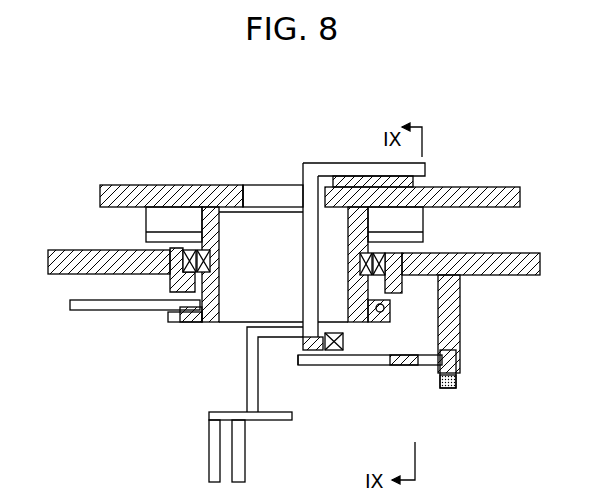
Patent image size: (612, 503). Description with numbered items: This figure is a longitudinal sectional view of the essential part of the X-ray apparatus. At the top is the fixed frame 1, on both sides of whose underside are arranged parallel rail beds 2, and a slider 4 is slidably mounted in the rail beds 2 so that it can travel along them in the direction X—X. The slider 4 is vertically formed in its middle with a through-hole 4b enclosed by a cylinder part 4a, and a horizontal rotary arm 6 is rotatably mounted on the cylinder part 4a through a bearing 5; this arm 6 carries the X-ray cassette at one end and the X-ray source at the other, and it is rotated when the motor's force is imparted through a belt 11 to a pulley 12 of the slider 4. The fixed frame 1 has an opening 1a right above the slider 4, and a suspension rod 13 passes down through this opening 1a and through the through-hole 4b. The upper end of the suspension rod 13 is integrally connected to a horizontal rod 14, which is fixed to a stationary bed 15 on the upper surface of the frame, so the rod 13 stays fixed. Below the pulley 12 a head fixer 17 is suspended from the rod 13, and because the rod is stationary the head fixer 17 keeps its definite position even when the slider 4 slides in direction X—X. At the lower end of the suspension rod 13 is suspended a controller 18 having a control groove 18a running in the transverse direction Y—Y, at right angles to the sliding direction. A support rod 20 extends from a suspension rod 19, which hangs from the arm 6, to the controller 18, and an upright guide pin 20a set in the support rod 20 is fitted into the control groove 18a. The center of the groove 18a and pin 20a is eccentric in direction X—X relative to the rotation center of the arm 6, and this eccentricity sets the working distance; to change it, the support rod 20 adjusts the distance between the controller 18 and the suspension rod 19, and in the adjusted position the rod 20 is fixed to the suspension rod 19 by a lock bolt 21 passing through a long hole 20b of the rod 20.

The fixed frame 1 is at (128, 185).
The opening 1a is at (290, 200).
The rail bed 2 is at (152, 186).
The slider 4 is at (196, 200).
The cylinder part 4a is at (200, 250).
The through-hole 4b is at (258, 225).
The bearing 5 is at (385, 262).
The horizontal rotary arm 6 is at (520, 255).
The belt 11 is at (76, 312).
The pulley 12 is at (192, 325).
The suspension rod 13 is at (310, 262).
The horizontal rod 14 is at (368, 172).
The stationary bed 15 is at (405, 185).
The head fixer 17 is at (212, 449).
The controller 18 is at (345, 340).
The control groove 18a is at (313, 354).
The suspension rod 19 is at (453, 335).
The support rod 20 is at (370, 367).
The guide pin 20a is at (332, 366).
The long hole 20b is at (425, 367).
The lock bolt 21 is at (457, 385).